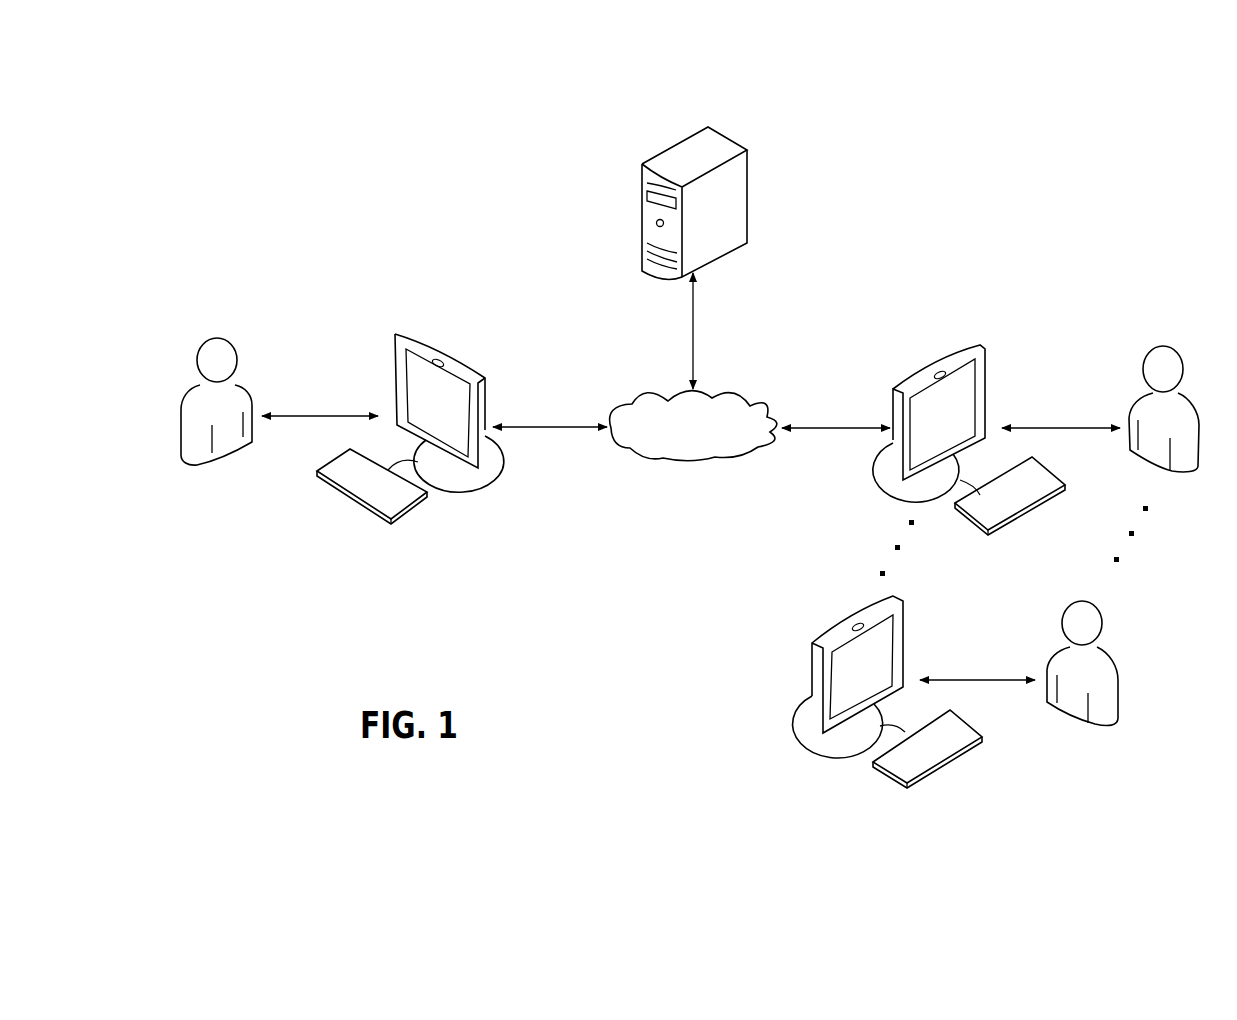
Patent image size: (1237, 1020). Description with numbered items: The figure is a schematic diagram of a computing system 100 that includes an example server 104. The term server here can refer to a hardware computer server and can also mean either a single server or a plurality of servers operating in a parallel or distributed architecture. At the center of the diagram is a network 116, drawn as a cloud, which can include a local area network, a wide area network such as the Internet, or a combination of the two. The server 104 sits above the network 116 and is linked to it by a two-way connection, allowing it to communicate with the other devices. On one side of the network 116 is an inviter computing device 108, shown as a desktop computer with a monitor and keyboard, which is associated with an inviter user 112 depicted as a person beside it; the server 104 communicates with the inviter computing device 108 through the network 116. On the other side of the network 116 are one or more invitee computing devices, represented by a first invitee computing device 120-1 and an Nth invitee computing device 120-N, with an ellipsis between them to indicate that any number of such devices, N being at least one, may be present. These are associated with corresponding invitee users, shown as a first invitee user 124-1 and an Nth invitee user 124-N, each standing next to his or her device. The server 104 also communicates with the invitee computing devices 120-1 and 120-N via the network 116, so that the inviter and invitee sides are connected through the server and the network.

The computing system 100 is at (279, 125).
The server 104 is at (672, 142).
The inviter computing device 108 is at (432, 343).
The inviter user 112 is at (217, 338).
The network 116 is at (639, 455).
The invitee computing device 120-1 is at (941, 357).
The invitee computing device 120-N is at (812, 752).
The invitee user 124-1 is at (1162, 346).
The invitee user 124-N is at (1103, 726).